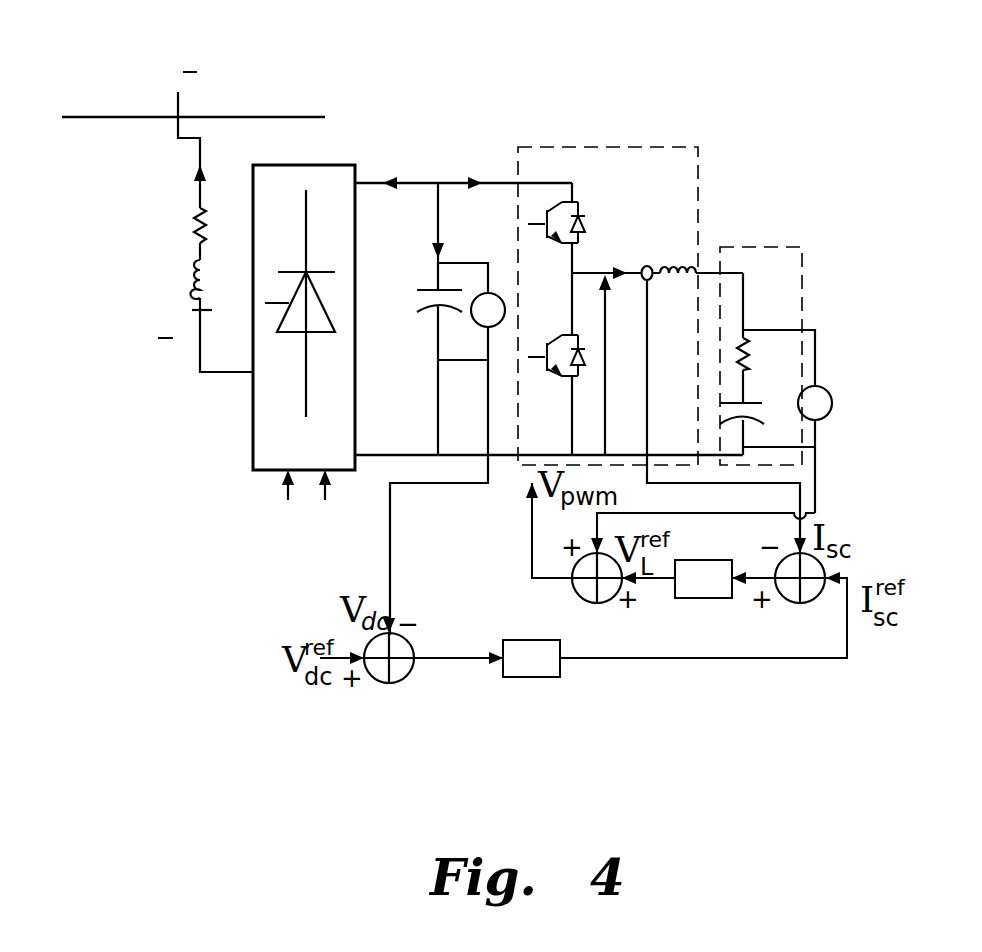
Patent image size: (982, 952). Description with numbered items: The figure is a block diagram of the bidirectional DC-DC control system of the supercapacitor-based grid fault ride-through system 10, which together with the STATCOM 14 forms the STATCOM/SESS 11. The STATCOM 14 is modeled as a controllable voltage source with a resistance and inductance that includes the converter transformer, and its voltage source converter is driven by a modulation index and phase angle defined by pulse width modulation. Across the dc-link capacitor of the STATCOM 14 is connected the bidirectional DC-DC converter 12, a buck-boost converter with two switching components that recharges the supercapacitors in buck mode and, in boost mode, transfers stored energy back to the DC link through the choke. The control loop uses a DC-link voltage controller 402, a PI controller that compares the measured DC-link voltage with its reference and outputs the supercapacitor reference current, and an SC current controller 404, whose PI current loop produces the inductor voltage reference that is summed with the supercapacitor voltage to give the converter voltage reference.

The supercapacitor-based grid fault ride-through system 10 is at (802, 302).
The STATCOM/SESS 11 is at (736, 73).
The bidirectional DC-DC converter 12 is at (698, 190).
The voltage source converter-DC link capacitor combination (STATCOM) 14 is at (253, 440).
The DC-link voltage controller 402 is at (528, 640).
The SC current controller 404 is at (673, 585).